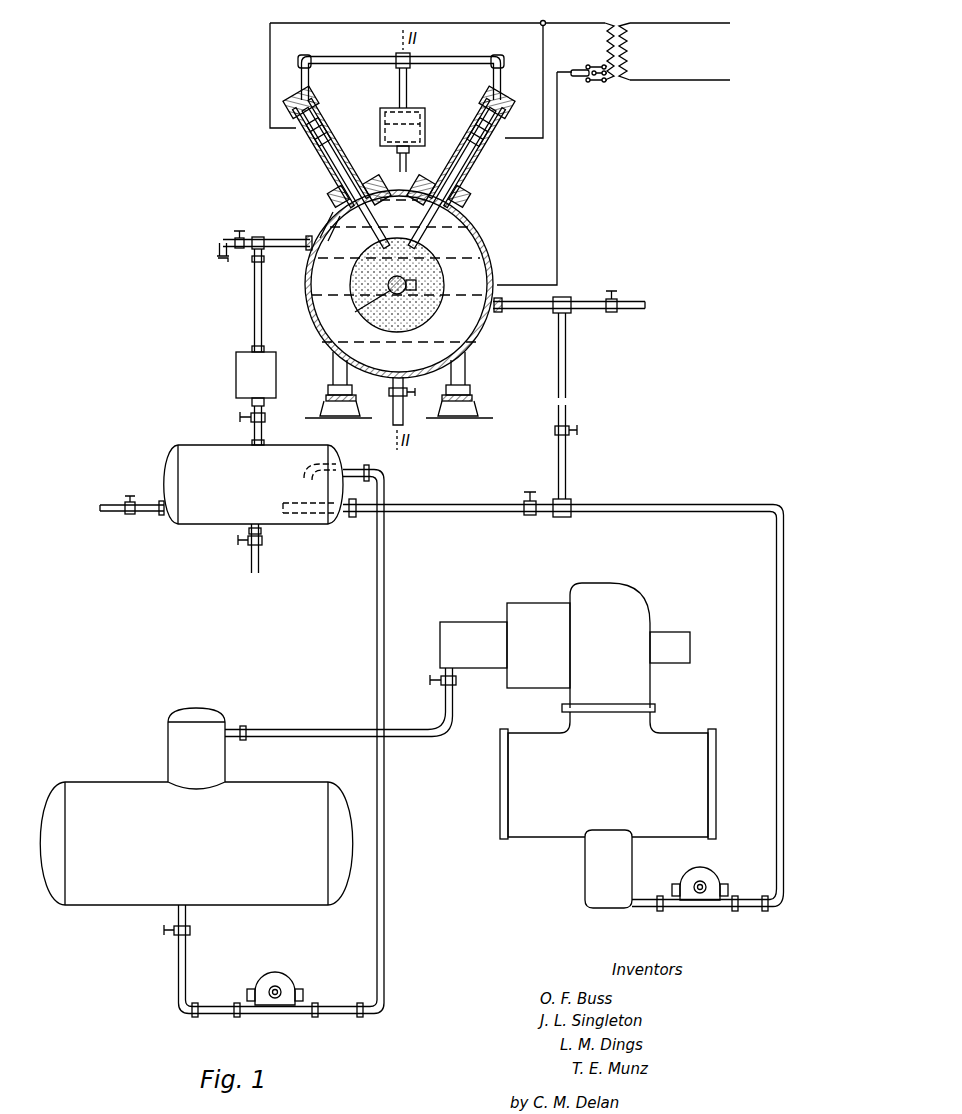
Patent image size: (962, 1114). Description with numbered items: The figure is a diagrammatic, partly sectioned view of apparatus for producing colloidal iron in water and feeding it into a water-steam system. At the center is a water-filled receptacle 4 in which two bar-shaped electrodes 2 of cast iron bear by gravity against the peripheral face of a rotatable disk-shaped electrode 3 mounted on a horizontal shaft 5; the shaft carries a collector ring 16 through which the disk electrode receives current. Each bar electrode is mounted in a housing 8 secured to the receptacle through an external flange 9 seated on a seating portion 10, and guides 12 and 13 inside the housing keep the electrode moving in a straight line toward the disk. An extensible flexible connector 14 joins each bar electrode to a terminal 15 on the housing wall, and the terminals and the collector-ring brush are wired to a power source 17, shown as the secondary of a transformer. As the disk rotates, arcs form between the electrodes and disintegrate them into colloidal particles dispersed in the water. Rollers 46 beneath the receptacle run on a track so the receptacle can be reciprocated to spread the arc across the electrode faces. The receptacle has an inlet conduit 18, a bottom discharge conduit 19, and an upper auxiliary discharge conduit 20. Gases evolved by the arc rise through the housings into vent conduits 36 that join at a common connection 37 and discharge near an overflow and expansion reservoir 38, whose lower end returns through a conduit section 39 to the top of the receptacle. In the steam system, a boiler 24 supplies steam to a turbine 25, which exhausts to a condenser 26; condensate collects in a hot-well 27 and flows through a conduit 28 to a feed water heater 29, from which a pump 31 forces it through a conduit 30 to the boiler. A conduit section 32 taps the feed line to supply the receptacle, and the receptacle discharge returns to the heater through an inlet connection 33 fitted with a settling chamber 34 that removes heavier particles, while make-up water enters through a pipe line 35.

The bar-shaped electrode 2 is at (376, 240).
The disk-shaped electrode 3 is at (421, 310).
The receptacle 4 is at (484, 316).
The horizontal shaft 5 is at (404, 283).
The electrode housing 8 is at (320, 166).
The external flange 9 is at (323, 205).
The seating portion 10 is at (333, 214).
The guide 12 is at (363, 235).
The guide 13 is at (360, 184).
The extensible flexible connector 14 is at (326, 138).
The terminal 15 is at (298, 130).
The collector ring 16 is at (363, 308).
The power source 17 is at (650, 52).
The inlet conduit 18 is at (521, 309).
The discharge conduit 19 is at (391, 392).
The auxiliary discharge conduit 20 is at (290, 248).
The boiler 24 is at (196, 806).
The steam turbine 25 is at (565, 647).
The condenser 26 is at (608, 775).
The hot-well 27 is at (585, 866).
The conduit 28 is at (458, 512).
The feed water heater 29 is at (253, 509).
The conduit 30 is at (376, 683).
The pump 31 is at (293, 981).
The conduit section 32 is at (565, 414).
The inlet connection 33 is at (255, 314).
The settling chamber 34 is at (235, 368).
The pipe line 35 is at (120, 509).
The conduit 36 is at (307, 85).
The common connection 37 is at (402, 68).
The overflow and expansion reservoir 38 is at (424, 123).
The conduit section 39 is at (408, 154).
The rollers 46 is at (330, 399).